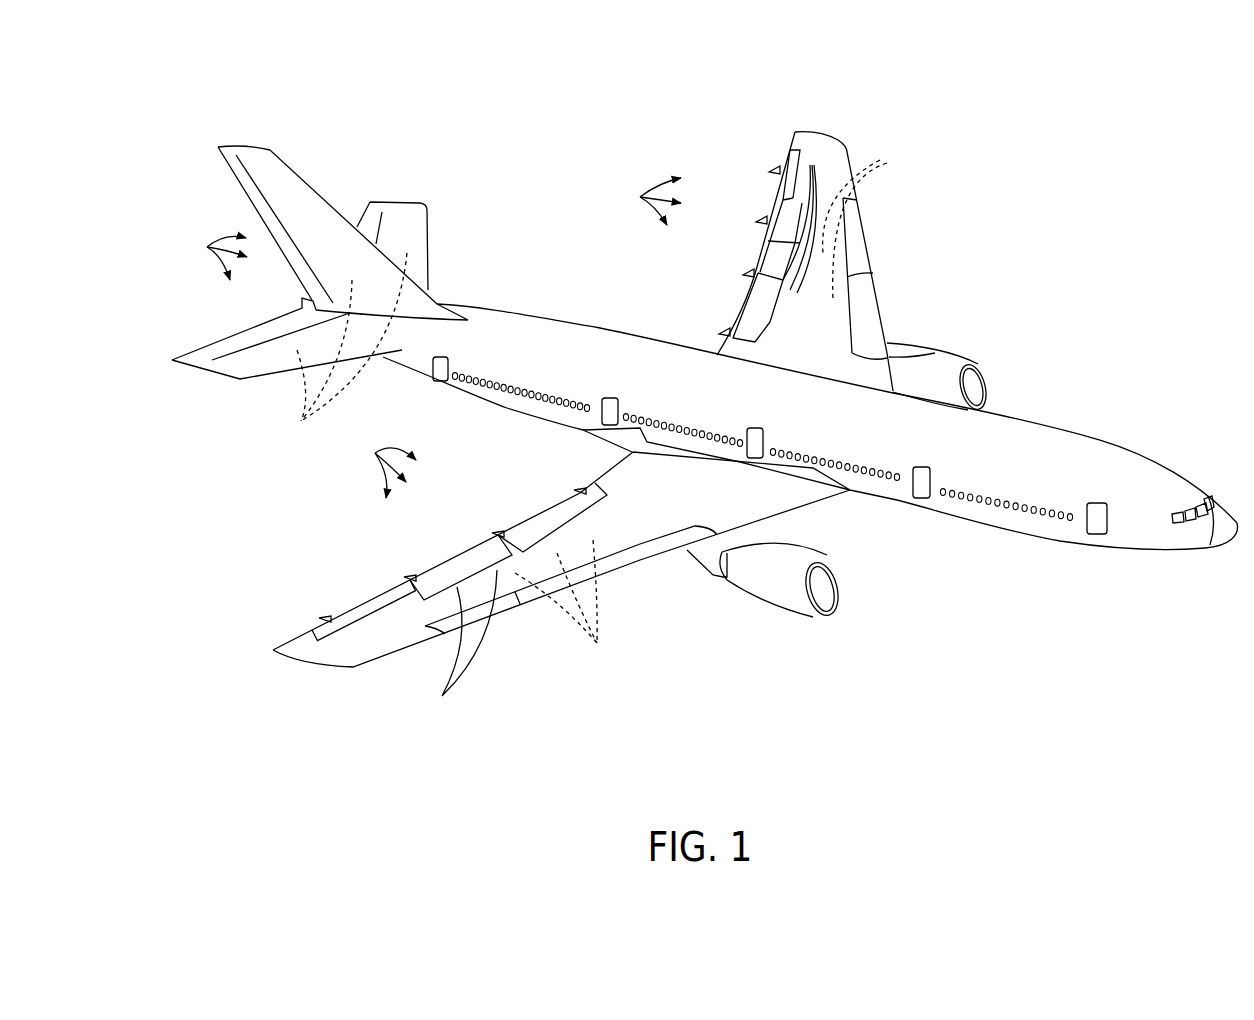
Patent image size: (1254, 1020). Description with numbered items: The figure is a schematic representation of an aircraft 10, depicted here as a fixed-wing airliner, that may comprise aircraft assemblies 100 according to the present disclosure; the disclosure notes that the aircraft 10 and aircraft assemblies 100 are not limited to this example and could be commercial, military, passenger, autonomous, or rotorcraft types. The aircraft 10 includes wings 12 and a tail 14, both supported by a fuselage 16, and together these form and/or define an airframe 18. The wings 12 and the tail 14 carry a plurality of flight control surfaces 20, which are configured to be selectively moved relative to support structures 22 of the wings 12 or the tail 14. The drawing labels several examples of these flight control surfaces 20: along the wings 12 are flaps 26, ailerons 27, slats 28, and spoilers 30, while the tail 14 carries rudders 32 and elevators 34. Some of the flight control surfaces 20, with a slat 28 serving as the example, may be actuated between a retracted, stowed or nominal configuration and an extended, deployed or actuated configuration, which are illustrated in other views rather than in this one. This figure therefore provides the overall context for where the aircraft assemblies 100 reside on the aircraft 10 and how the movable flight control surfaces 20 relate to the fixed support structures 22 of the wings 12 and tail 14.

The aircraft 10 is at (1050, 186).
The wings 12 is at (686, 409).
The tail 14 is at (292, 162).
The fuselage 16 is at (568, 323).
The airframe 18 is at (1030, 236).
The flight control surfaces 20 is at (429, 338).
The support structures 22 is at (889, 160).
The flaps 26 is at (460, 557).
The ailerons 27 is at (360, 612).
The slats 28 is at (503, 612).
The spoilers 30 is at (803, 87).
The rudders 32 is at (240, 190).
The elevators 34 is at (360, 217).
The aircraft assemblies 100 is at (930, 256).